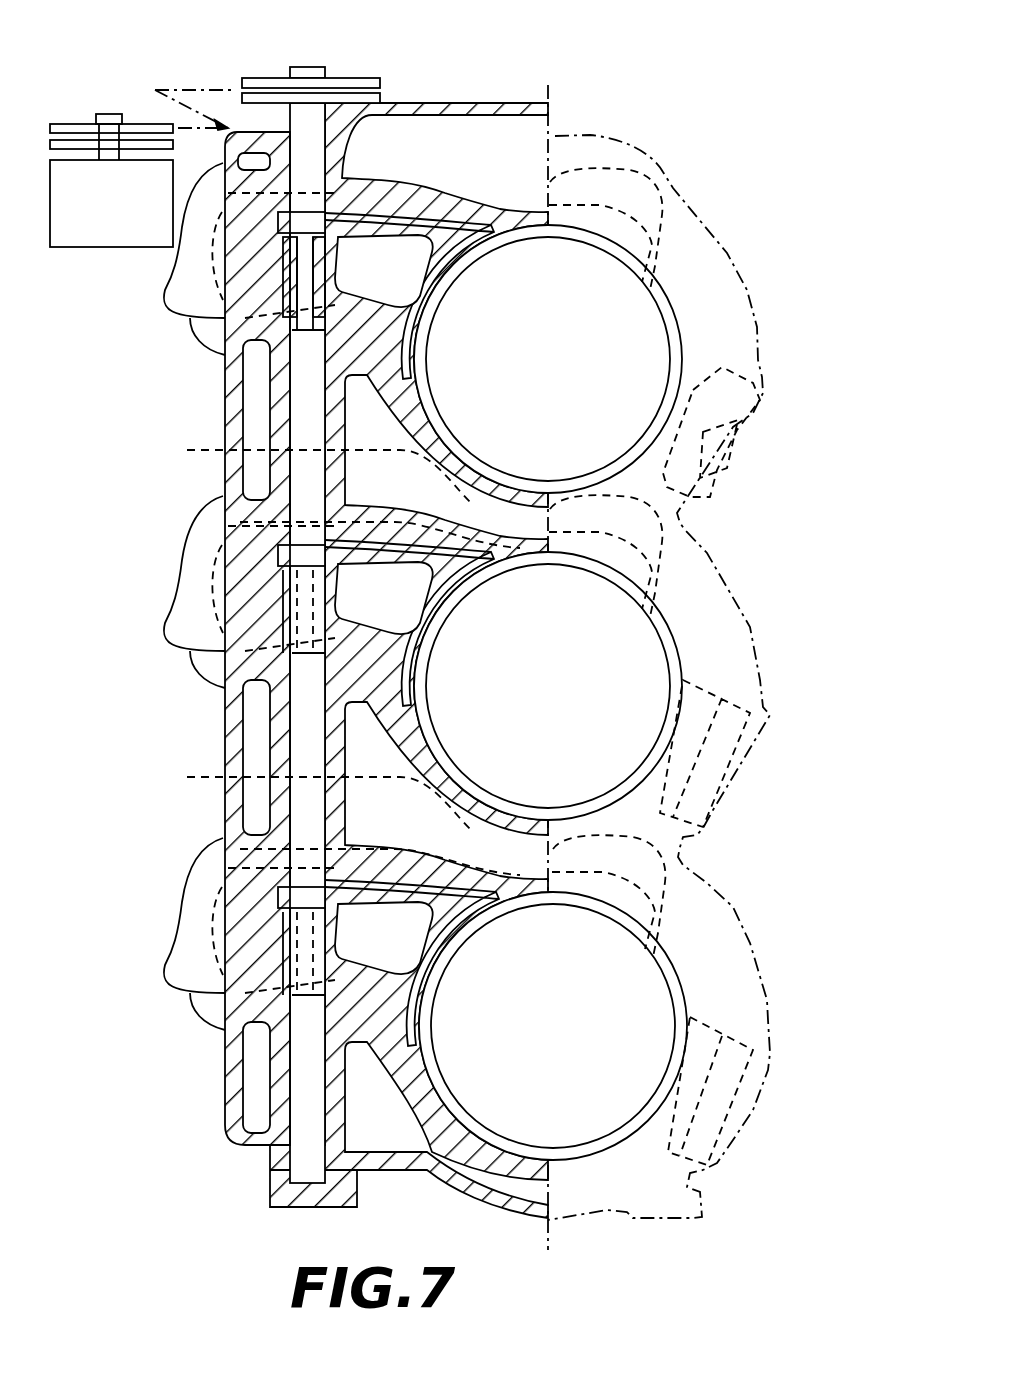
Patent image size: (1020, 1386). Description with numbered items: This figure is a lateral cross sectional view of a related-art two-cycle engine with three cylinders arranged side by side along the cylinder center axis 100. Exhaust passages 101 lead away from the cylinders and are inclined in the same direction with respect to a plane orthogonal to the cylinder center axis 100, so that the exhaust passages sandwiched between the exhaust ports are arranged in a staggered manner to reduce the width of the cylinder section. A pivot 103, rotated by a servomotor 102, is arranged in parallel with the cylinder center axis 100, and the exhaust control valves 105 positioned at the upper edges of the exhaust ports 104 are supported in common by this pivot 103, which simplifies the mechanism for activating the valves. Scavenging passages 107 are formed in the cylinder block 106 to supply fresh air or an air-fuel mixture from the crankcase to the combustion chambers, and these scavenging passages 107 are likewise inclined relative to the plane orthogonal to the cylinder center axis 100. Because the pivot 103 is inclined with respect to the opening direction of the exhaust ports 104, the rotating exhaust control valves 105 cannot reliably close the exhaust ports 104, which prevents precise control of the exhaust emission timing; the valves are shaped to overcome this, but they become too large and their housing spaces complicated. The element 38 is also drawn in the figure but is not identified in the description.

The center axis of the cylinders 100 is at (548, 88).
The exhaust passages 101 is at (412, 216).
The servomotor 102 is at (104, 250).
The pivot 103 is at (302, 734).
The exhaust ports 104 is at (452, 284).
The exhaust control valves 105 is at (428, 333).
The cylinder block 106 is at (750, 290).
The scavenging passages 107 is at (800, 447).
The bolt 38 is at (328, 266).